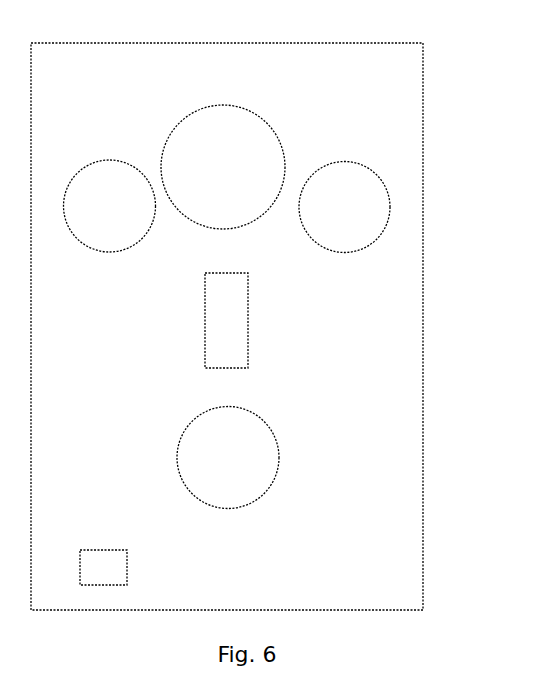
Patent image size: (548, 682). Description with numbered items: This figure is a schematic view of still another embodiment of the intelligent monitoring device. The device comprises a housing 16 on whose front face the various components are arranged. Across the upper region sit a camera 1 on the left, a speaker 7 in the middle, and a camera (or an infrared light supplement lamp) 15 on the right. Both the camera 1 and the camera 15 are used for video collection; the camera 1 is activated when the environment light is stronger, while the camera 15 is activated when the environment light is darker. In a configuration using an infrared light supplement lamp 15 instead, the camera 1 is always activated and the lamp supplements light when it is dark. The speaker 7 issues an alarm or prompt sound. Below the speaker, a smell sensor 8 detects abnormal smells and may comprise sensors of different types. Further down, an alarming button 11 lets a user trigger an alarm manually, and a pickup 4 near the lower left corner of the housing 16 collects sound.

The housing 16 is at (55, 92).
The camera 1 is at (109, 196).
The speaker 7 is at (223, 170).
The camera or infrared light supplement lamp 15 is at (345, 195).
The smell sensor 8 is at (228, 319).
The alarming button 11 is at (227, 457).
The pickup 4 is at (105, 568).